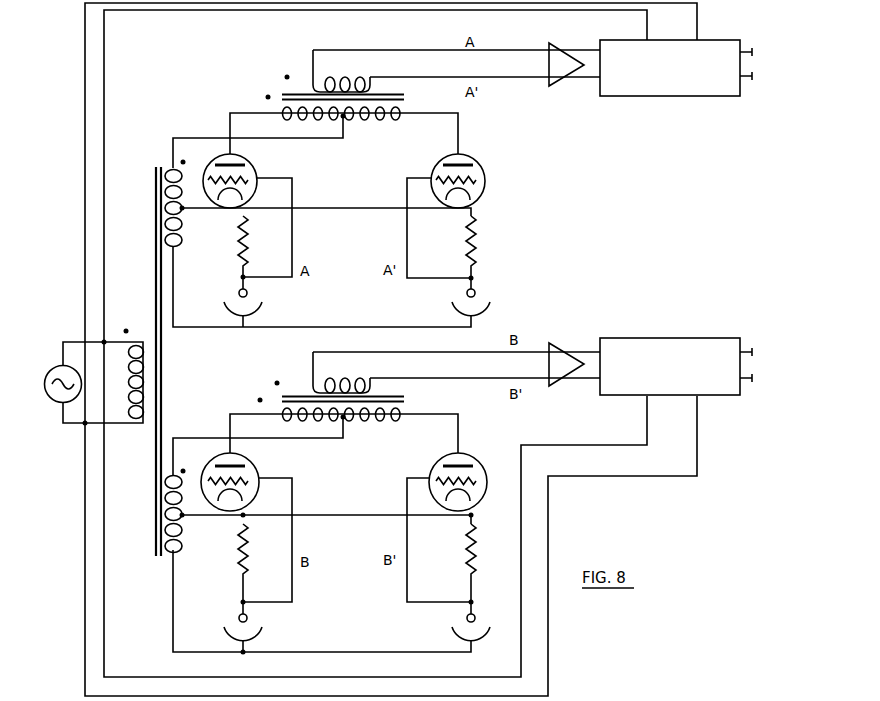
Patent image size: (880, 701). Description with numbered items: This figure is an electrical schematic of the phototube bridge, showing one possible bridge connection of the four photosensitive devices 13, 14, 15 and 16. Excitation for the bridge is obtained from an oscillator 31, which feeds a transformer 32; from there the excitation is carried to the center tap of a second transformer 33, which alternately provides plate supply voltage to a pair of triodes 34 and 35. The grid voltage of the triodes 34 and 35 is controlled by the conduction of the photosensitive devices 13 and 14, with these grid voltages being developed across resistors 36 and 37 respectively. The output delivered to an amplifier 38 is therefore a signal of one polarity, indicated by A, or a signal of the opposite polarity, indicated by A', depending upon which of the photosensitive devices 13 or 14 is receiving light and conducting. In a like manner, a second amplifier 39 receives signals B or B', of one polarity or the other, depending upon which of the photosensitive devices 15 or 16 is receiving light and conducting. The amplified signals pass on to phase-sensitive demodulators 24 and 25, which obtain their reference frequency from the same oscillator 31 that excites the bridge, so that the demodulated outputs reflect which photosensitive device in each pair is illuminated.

The photosensitive device 13 is at (262, 299).
The photosensitive device 14 is at (452, 299).
The photosensitive device 15 is at (262, 624).
The photosensitive device 16 is at (452, 624).
The phase-sensitive demodulator 24 is at (712, 43).
The phase-sensitive demodulator 25 is at (713, 347).
The oscillator 31 is at (54, 374).
The transformer 32 is at (136, 326).
The transformer 33 is at (277, 86).
The triode 34 is at (249, 172).
The triode 35 is at (440, 167).
The resistor 36 is at (238, 236).
The resistor 37 is at (478, 228).
The amplifier 38 is at (556, 52).
The amplifier 39 is at (551, 353).